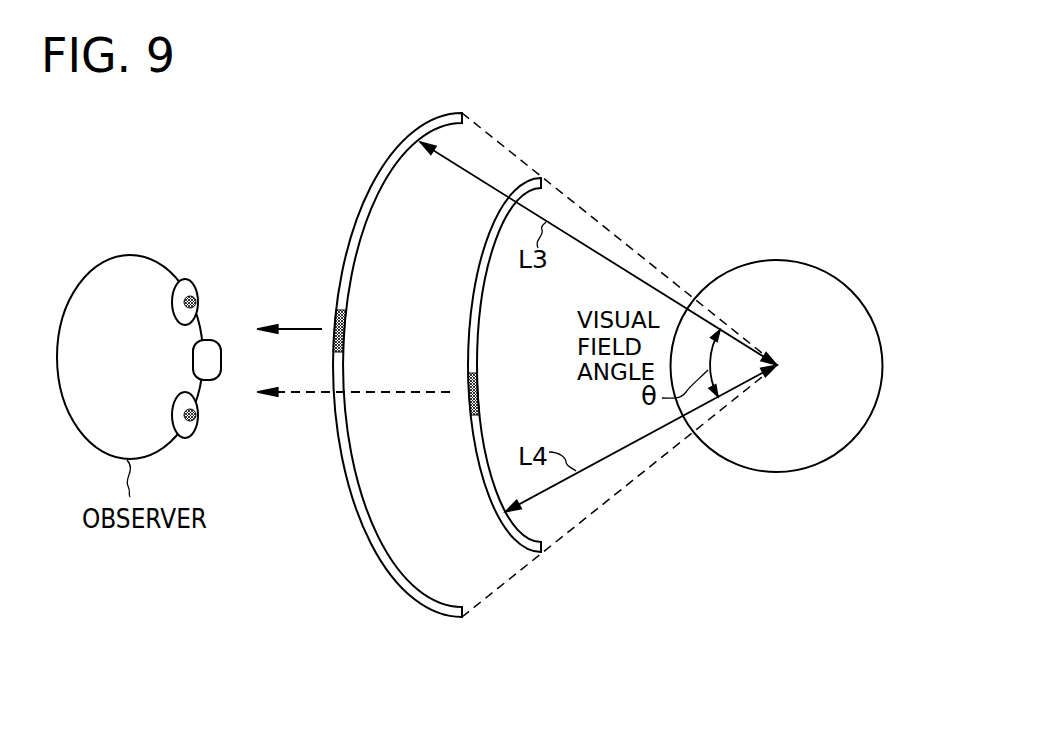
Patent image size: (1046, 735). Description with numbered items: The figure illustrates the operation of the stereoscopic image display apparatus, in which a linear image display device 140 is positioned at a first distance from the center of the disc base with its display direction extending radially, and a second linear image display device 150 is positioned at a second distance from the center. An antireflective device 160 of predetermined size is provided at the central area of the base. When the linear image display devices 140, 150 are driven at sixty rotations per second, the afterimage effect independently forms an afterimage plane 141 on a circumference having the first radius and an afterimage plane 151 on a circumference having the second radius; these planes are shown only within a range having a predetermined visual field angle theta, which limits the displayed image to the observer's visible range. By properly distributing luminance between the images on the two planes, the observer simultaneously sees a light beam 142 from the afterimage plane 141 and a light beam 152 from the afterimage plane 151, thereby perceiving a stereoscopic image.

The linear image display device 140 is at (345, 332).
The afterimage plane 141 is at (362, 237).
The light beam 142 is at (292, 329).
The linear image display device 150 is at (480, 400).
The afterimage plane 151 is at (480, 341).
The light beam 152 is at (288, 394).
The antireflective device 160 is at (790, 262).